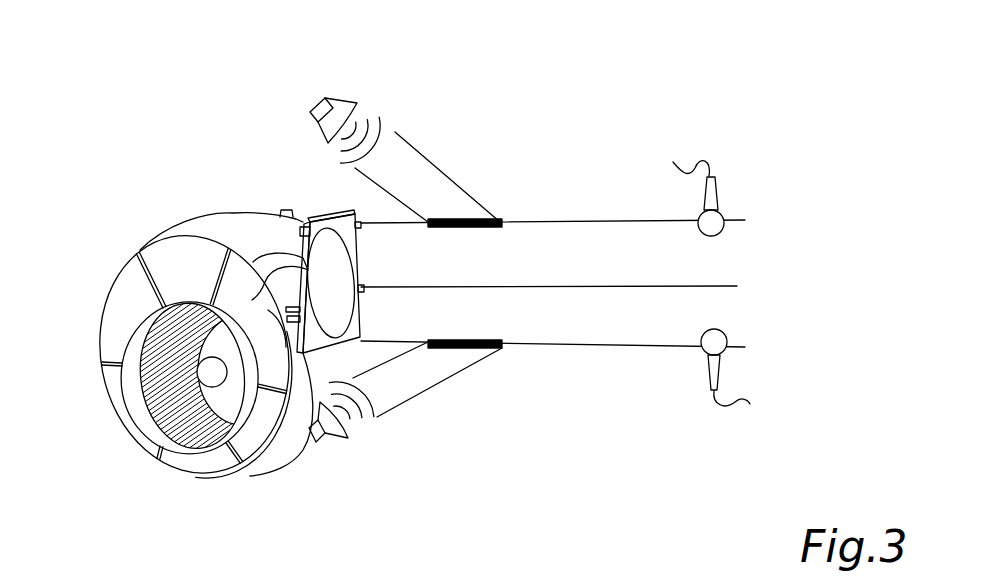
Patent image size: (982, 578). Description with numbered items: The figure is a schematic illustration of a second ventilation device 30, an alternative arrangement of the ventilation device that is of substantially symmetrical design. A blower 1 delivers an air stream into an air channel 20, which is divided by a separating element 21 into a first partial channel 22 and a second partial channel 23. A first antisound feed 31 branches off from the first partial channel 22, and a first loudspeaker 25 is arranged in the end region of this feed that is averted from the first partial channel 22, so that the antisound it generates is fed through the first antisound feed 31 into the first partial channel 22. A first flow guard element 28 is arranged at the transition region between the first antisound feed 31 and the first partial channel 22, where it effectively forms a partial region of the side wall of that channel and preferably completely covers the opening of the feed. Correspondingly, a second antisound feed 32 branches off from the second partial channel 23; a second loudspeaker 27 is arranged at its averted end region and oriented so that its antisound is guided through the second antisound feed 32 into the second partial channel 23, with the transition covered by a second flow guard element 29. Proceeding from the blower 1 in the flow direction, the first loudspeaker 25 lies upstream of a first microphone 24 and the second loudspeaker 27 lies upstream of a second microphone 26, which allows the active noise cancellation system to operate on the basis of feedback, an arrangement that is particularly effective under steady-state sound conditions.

The blower 1 is at (217, 232).
The air channel 20 is at (553, 281).
The separating element 21 is at (582, 288).
The first partial channel 22 is at (642, 269).
The second partial channel 23 is at (642, 330).
The first microphone 24 is at (718, 192).
The first loudspeaker 25 is at (313, 105).
The second microphone 26 is at (720, 377).
The second loudspeaker 27 is at (315, 444).
The first flow guard element 28 is at (483, 220).
The second flow guard element 29 is at (472, 350).
The second ventilation device 30 is at (80, 137).
The first antisound feed 31 is at (418, 170).
The second antisound feed 32 is at (392, 383).